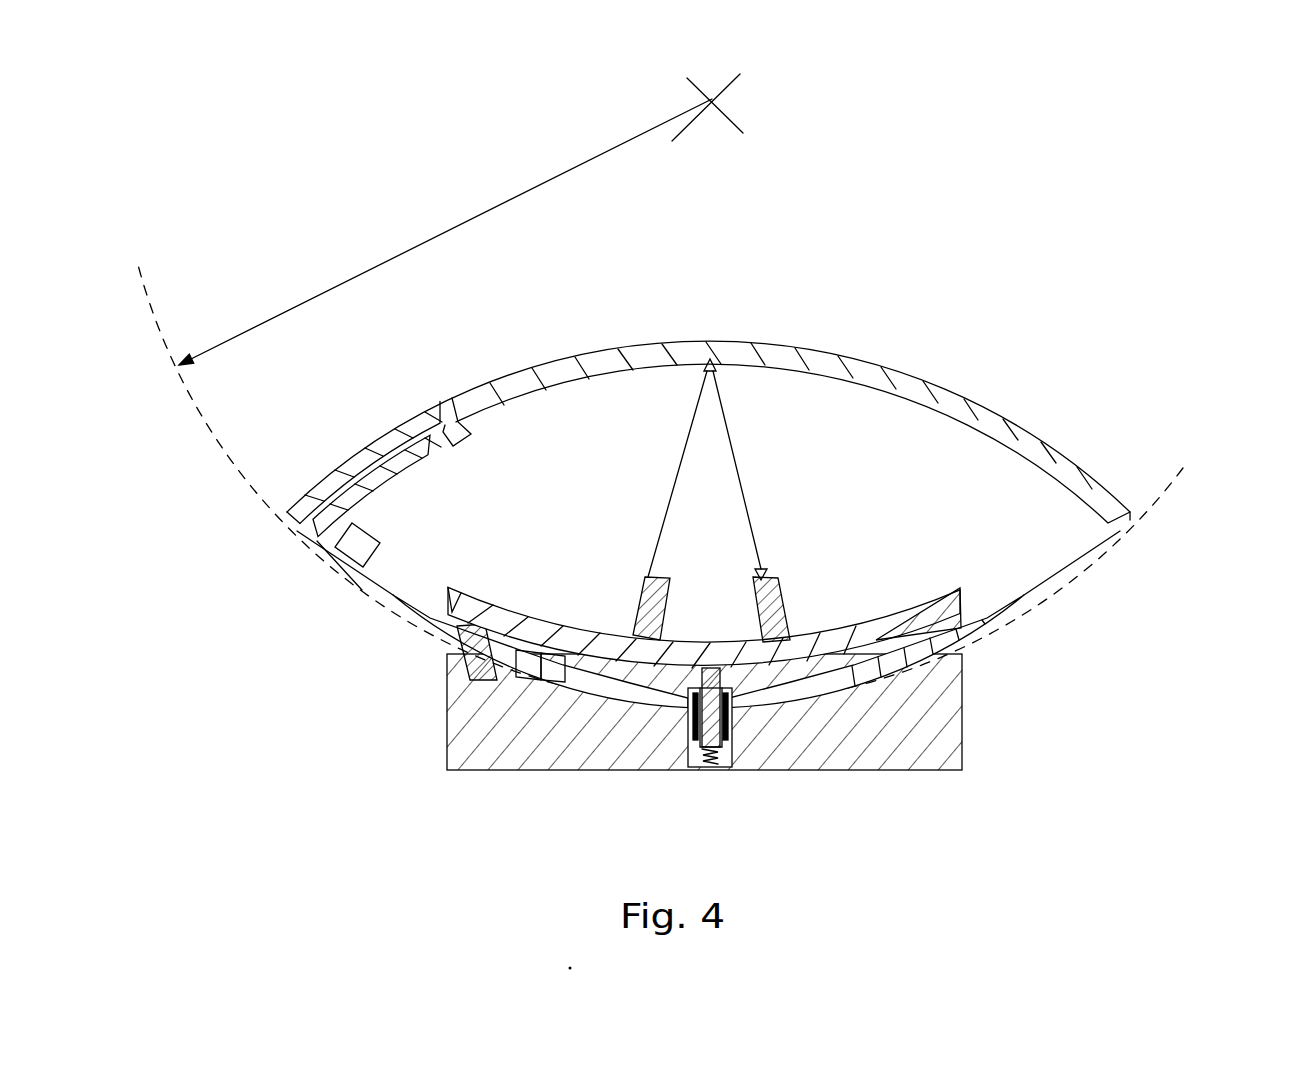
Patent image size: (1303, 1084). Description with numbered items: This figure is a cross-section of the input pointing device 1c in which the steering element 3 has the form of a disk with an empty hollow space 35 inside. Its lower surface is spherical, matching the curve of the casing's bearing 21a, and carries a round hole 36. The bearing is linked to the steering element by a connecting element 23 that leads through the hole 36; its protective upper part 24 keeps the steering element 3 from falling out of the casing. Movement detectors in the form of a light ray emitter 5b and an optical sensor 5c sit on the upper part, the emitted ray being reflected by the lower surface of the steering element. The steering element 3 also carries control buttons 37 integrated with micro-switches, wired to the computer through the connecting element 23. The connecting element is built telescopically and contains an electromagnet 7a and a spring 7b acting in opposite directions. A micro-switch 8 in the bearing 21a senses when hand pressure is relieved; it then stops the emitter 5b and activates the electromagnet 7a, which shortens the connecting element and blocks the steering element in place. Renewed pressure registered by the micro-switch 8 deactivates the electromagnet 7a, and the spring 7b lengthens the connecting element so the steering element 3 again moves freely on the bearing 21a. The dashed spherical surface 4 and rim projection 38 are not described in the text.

The steering element 3 is at (1078, 434).
The spherical reference surface 4 is at (255, 502).
The empty hollow space 35 is at (887, 497).
The control buttons 37 is at (330, 487).
The rim projection 38 is at (358, 551).
The protective upper part 24 is at (943, 610).
The light ray emitter 5b is at (466, 627).
The optical sensor 5c is at (773, 618).
The bearing 21a is at (490, 668).
The micro-switch 8 is at (505, 693).
The input pointing device 1c is at (420, 762).
The round hole 36 is at (828, 678).
The connecting element 23 is at (713, 683).
The electromagnet 7a is at (722, 738).
The spring 7b is at (705, 758).